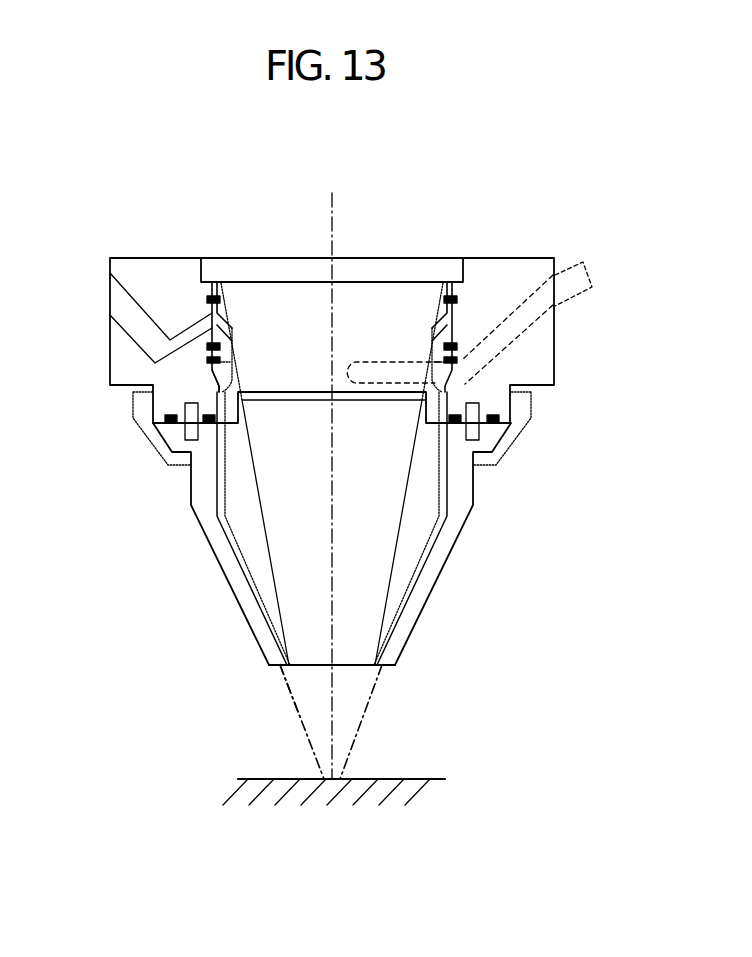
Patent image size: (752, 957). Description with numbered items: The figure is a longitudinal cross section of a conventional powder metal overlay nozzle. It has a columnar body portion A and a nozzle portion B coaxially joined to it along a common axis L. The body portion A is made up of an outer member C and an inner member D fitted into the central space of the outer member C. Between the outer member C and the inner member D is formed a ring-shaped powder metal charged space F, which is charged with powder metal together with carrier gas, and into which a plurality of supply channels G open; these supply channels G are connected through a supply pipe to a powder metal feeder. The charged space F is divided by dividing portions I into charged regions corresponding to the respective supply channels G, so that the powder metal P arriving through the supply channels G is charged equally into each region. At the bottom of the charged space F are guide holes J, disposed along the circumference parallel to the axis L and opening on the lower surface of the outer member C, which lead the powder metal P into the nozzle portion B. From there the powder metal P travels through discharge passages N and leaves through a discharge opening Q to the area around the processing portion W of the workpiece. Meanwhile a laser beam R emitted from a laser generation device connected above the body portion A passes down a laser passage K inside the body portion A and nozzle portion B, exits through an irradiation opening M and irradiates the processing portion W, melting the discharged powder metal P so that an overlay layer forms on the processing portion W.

The body portion A is at (523, 242).
The nozzle portion B is at (498, 514).
The outer member C is at (152, 257).
The inner member D is at (352, 263).
The left gas passage tube E is at (223, 307).
The powder metal charged space F is at (222, 380).
The supply channels G is at (357, 363).
The dividing portions I is at (445, 375).
The guide holes J is at (217, 405).
The laser passage K is at (380, 485).
The axis L is at (334, 466).
The irradiation opening M is at (355, 665).
The discharge passages N is at (191, 517).
The powder metal P is at (305, 722).
The discharge opening Q is at (283, 677).
The laser beam R is at (325, 750).
The processing portion W is at (325, 773).